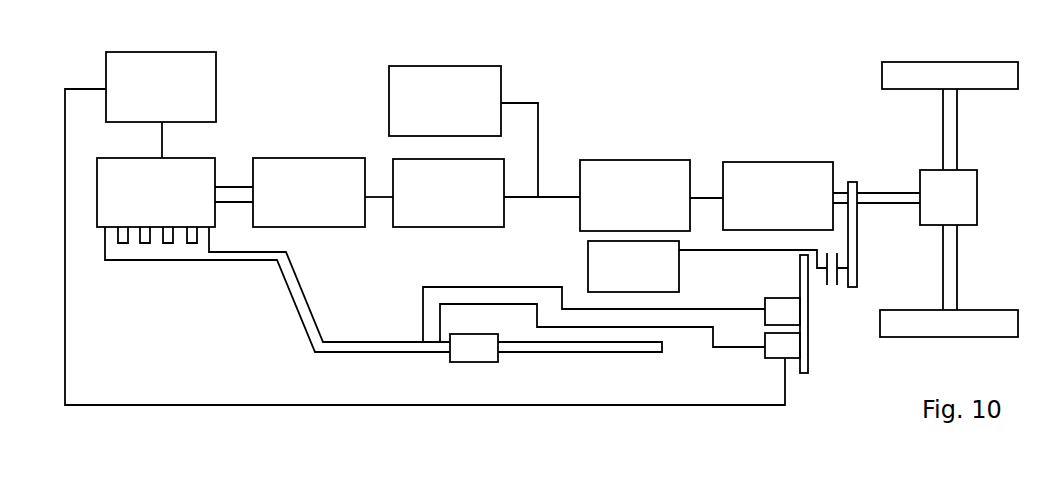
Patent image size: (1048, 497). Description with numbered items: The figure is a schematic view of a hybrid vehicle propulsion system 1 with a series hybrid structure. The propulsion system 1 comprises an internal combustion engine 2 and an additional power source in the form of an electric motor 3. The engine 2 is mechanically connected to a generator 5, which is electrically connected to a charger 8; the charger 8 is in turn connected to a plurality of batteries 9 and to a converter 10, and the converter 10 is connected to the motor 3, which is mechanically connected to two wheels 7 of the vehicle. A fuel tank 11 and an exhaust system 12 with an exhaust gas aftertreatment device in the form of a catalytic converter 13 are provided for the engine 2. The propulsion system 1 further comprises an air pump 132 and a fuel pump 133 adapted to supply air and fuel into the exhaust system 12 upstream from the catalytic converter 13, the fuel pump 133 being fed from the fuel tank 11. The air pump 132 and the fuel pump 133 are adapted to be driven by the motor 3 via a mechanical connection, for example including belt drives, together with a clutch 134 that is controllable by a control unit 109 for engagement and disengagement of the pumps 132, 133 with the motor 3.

The hybrid vehicle propulsion system 1 is at (638, 105).
The internal combustion engine 2 is at (148, 207).
The electric motor 3 is at (773, 208).
The generator 5 is at (301, 202).
The wheels 7 is at (997, 90).
The charger 8 is at (440, 207).
The batteries 9 is at (436, 115).
The converter 10 is at (620, 209).
The fuel tank 11 is at (145, 97).
The exhaust system 12 is at (383, 353).
The catalytic converter 13 is at (483, 363).
The control unit 109 is at (614, 279).
The air pump 132 is at (773, 298).
The fuel pump 133 is at (773, 358).
The clutch 134 is at (826, 281).